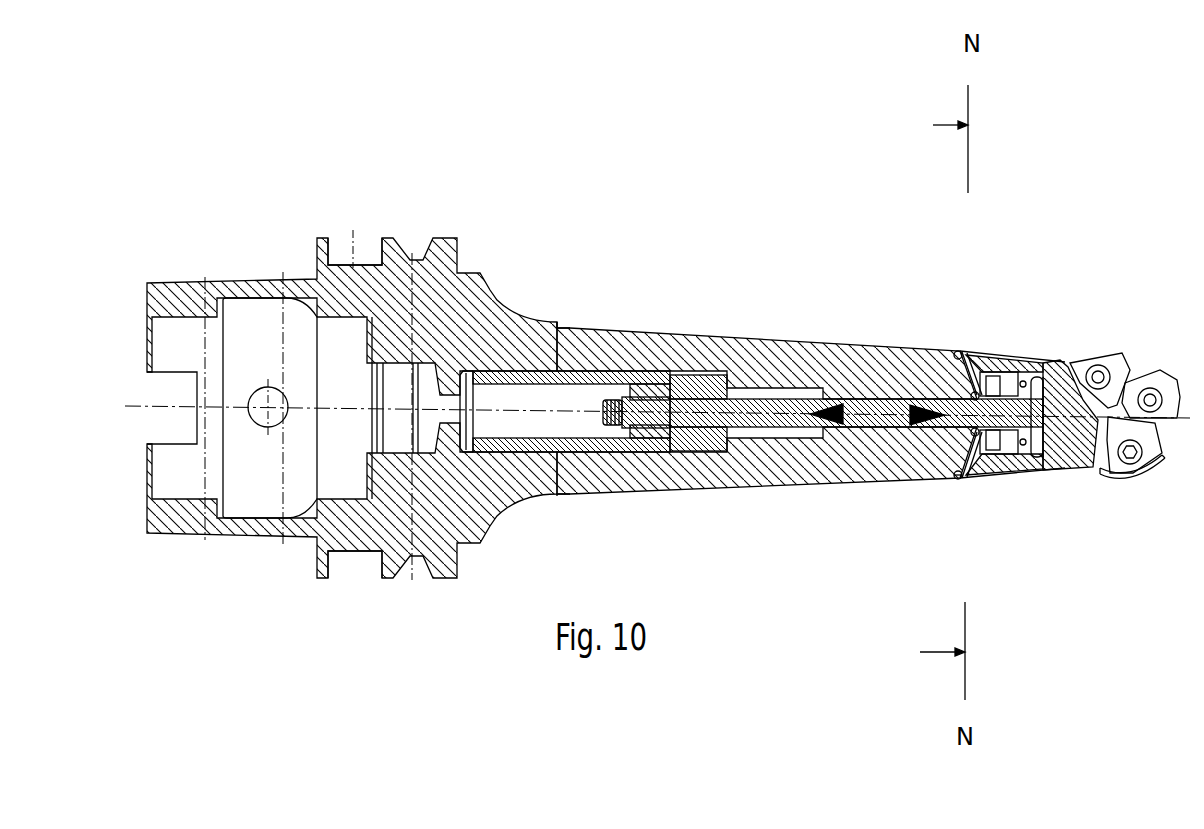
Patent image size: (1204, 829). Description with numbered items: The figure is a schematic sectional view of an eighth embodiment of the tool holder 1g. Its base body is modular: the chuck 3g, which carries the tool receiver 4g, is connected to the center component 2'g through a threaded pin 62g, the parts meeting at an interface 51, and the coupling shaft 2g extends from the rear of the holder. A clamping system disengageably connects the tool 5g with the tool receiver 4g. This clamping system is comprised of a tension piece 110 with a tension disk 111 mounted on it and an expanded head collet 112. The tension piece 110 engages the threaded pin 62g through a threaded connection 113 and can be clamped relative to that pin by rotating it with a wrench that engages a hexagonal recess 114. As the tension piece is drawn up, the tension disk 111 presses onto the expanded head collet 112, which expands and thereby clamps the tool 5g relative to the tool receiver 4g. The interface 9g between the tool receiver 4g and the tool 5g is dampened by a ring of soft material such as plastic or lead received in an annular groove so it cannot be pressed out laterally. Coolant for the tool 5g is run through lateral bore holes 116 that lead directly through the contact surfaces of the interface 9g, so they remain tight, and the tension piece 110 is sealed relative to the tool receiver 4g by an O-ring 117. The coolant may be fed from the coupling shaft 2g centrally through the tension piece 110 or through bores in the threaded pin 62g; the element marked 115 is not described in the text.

The tool holder 1g is at (660, 236).
The coupling shaft 2g is at (230, 285).
The center component 2'g is at (364, 373).
The chuck 3g is at (836, 352).
The tool receiver 4g is at (943, 367).
The tool 5g is at (1109, 303).
The interface 9g is at (963, 302).
The interface 51 is at (559, 298).
The threaded pin 62g is at (502, 375).
The tension piece 110 is at (760, 404).
The tension disk 111 is at (1037, 447).
The expanded head collet 112 is at (1023, 380).
The threaded connection 113 is at (647, 422).
The hexagonal recess 114 is at (605, 412).
The screw 115 is at (957, 479).
The lateral bore holes 116 is at (993, 470).
The O-ring 117 is at (977, 392).